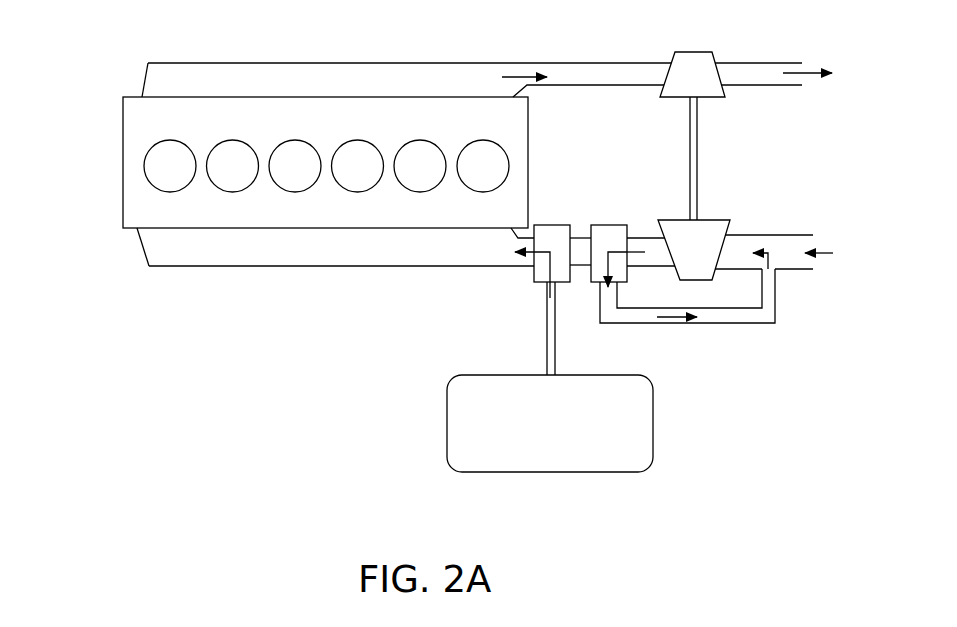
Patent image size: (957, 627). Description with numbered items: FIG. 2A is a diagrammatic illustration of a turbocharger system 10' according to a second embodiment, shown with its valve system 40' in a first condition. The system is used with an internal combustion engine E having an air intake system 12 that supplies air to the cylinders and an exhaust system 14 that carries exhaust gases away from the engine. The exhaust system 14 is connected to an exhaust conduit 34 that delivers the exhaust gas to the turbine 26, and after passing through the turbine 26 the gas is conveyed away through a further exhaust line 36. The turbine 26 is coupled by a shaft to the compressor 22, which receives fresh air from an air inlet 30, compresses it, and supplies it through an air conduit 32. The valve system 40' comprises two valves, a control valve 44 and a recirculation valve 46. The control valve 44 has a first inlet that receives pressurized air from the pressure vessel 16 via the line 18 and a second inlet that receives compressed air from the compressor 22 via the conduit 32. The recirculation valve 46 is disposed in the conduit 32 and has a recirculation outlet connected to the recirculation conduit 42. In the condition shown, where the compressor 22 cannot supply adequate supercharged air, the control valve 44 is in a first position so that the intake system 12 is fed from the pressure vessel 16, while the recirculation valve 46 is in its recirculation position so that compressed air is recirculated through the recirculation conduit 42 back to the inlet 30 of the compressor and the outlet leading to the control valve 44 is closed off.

The internal combustion engine E is at (132, 171).
The exhaust system 14 is at (153, 80).
The air intake system 12 is at (163, 247).
The exhaust conduit 34 is at (593, 72).
The turbine 26 is at (683, 65).
The further exhaust line 36 is at (758, 70).
The compressor 22 is at (708, 232).
The air inlet 30 is at (798, 258).
The air conduit 32 is at (645, 247).
The control valve 44 is at (555, 230).
The recirculation valve 46 is at (612, 230).
The valve system 40' is at (500, 279).
The recirculation conduit 42 is at (727, 318).
The line 18 is at (545, 355).
The pressure vessel 16 is at (458, 433).
The turbocharger system 10' is at (849, 151).